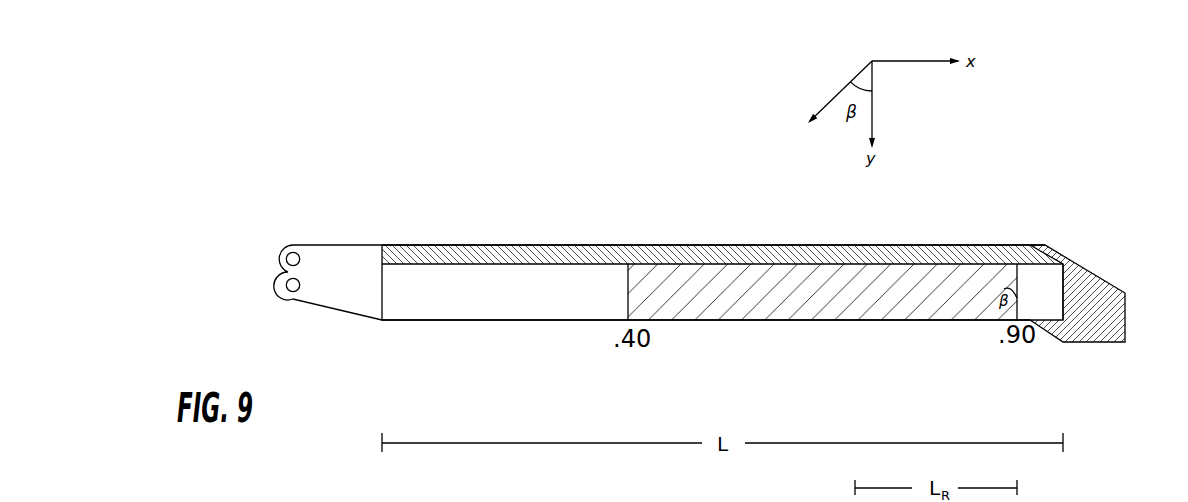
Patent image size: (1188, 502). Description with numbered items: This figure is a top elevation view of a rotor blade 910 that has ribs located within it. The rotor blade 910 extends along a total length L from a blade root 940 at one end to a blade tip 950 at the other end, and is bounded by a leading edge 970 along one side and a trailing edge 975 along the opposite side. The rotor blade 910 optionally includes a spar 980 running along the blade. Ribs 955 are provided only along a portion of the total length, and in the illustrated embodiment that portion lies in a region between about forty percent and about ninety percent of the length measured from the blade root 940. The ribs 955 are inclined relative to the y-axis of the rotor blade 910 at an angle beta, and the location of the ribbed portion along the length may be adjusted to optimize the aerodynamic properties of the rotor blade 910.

The rotor blade 910 is at (456, 134).
The blade root 940 is at (335, 245).
The blade tip 950 is at (1083, 268).
The ribs 955 is at (902, 295).
The leading edge 970 is at (958, 243).
The trailing edge 975 is at (748, 320).
The spar 980 is at (605, 257).